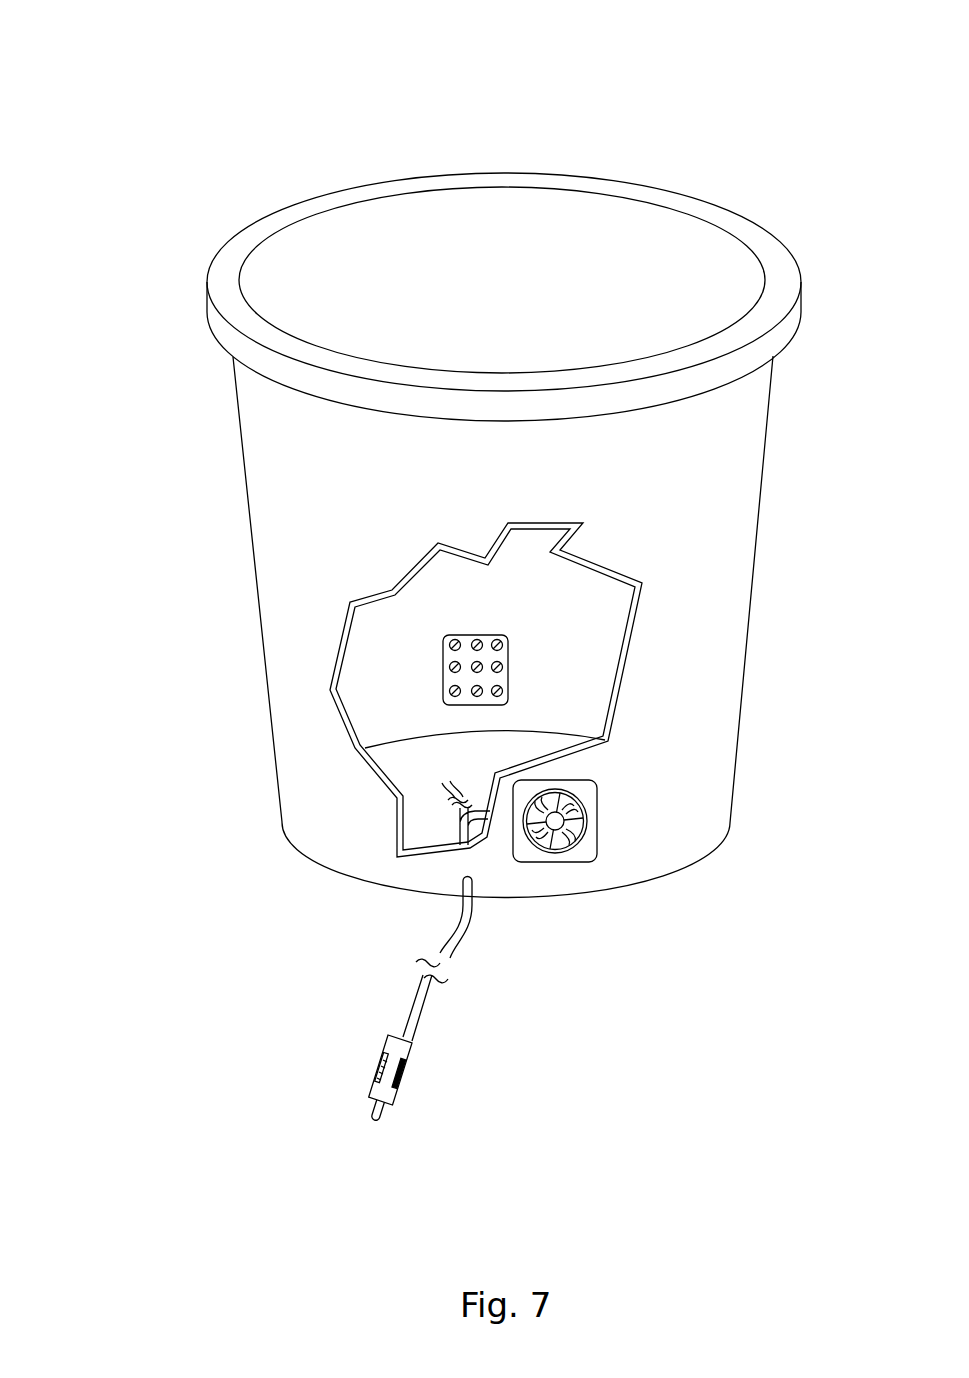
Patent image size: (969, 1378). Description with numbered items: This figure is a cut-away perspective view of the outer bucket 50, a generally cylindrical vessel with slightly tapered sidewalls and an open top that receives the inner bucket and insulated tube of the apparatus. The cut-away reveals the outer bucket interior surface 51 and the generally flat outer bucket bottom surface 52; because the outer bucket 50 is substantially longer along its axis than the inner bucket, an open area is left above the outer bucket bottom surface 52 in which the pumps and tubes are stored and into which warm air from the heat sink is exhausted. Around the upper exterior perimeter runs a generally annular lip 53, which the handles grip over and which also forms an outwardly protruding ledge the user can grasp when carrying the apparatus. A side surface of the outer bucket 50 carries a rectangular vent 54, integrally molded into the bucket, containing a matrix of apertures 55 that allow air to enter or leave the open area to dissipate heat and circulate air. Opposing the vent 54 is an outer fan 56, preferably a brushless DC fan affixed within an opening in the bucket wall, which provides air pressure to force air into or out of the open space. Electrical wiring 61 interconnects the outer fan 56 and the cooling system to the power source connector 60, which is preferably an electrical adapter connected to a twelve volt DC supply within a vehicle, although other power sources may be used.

The outer bucket 50 is at (143, 120).
The outer bucket interior surface 51 is at (533, 227).
The outer bucket bottom surface 52 is at (385, 752).
The lip 53 is at (240, 350).
The vent 54 is at (505, 656).
The apertures 55 is at (489, 639).
The outer fan 56 is at (588, 852).
The power source connector 60 is at (388, 1085).
The electrical wiring 61 is at (441, 809).